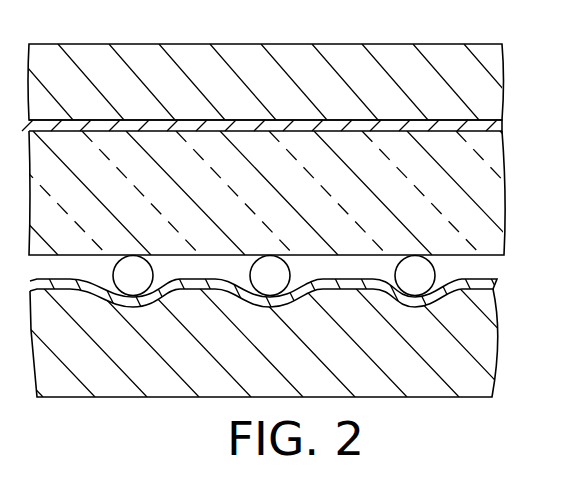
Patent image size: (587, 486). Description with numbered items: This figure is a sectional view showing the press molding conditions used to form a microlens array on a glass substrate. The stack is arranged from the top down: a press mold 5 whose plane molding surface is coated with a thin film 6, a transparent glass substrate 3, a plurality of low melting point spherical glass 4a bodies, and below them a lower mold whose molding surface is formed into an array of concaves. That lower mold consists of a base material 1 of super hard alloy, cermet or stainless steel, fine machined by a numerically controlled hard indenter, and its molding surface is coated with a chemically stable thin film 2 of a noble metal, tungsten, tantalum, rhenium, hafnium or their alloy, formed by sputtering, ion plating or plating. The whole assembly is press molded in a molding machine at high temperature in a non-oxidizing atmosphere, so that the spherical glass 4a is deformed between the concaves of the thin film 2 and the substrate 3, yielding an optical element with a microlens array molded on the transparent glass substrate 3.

The base material 1 is at (485, 358).
The chemically stable thin film 2 is at (497, 285).
The transparent glass substrate 3 is at (492, 198).
The low melting point spherical glass 4a is at (437, 270).
The press mold 5 is at (482, 86).
The thin film 6 is at (500, 127).